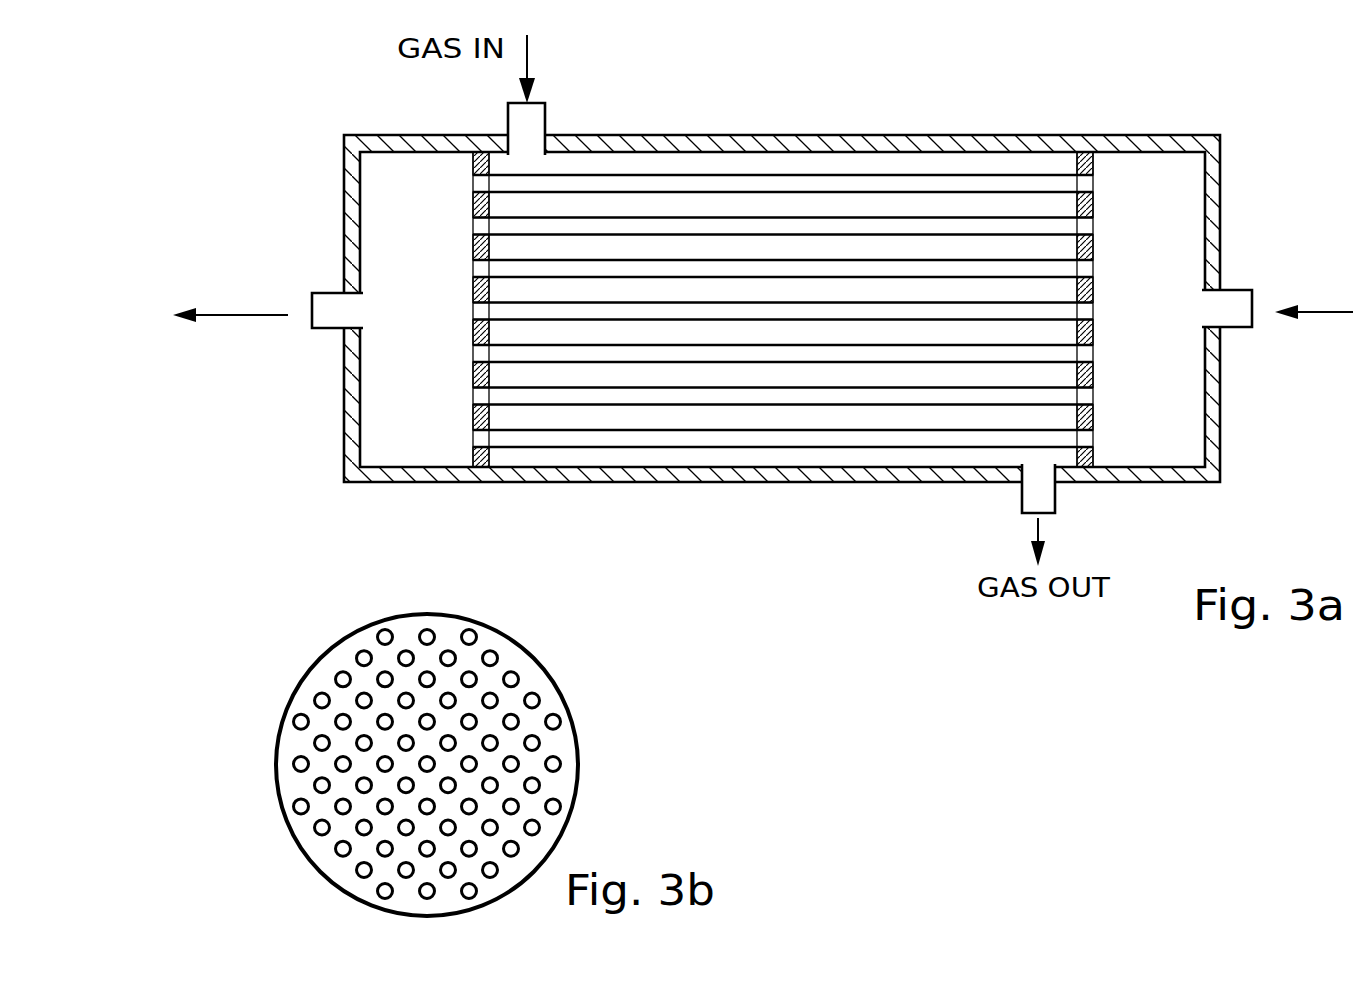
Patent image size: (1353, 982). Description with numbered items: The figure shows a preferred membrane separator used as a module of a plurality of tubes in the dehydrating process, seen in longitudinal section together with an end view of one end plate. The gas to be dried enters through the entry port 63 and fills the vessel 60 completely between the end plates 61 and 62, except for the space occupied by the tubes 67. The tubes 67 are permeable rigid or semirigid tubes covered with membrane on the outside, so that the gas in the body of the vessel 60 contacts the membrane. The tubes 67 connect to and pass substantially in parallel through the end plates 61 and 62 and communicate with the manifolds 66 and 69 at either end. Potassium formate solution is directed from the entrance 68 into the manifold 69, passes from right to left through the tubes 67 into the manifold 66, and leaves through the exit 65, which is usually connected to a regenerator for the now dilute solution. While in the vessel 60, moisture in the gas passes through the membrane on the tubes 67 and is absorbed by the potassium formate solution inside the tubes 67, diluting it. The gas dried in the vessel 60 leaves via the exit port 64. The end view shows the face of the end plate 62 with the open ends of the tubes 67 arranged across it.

In FIG. 3A, the vessel 60 is at (896, 136).
In FIG. 3A, the end plate 61 is at (473, 409).
In FIG. 3A, the end plate 62 is at (1096, 411).
In FIG. 3B, the end plate 62 is at (304, 845).
In FIG. 3A, the entry port 63 is at (546, 116).
In FIG. 3A, the exit port 64 is at (1021, 498).
In FIG. 3A, the exit 65 is at (318, 293).
In FIG. 3A, the manifold 66 is at (383, 200).
In FIG. 3A, the tubes 67 is at (712, 186).
In FIG. 3B, the tubes 67 is at (308, 700).
In FIG. 3A, the entrance 68 is at (1238, 290).
In FIG. 3A, the manifold 69 is at (1180, 197).